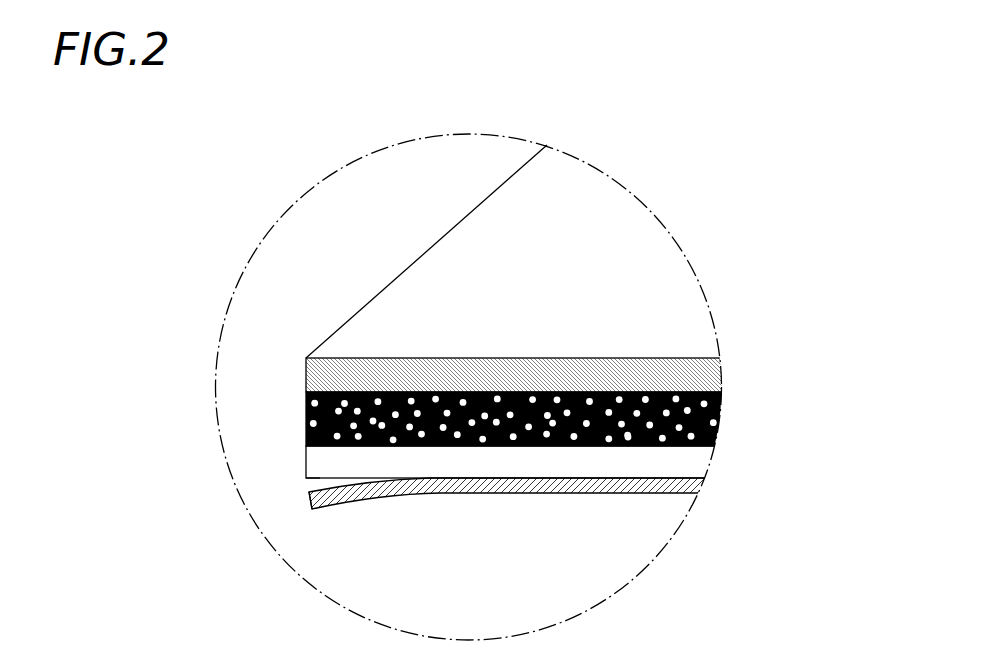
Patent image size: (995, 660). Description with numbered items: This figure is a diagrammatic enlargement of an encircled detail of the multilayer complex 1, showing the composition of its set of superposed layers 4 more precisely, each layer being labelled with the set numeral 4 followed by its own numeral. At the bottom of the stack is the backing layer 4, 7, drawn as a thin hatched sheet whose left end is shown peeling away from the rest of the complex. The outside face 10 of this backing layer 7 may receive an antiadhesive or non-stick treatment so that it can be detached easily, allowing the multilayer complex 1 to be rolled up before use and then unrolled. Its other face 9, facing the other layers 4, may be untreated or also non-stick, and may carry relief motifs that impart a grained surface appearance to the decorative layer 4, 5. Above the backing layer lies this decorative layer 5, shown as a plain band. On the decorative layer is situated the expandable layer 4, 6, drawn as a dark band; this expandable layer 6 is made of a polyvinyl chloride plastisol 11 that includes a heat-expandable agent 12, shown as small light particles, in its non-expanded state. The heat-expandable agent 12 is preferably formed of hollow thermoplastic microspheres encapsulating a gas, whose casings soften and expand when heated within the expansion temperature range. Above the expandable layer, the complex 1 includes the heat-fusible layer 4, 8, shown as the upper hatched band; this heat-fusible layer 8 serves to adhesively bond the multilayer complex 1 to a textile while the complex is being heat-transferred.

The multilayer complex 1 is at (294, 290).
The superposed layers 4 is at (476, 399).
The cover plate 4, 8 is at (516, 310).
The heat-fusible layer 8 is at (440, 320).
The light guide / scattering layer 4, 6 is at (474, 404).
The expandable layer 6 is at (290, 422).
The transparent layer 4, 5 is at (516, 508).
The decorative layer 5 is at (460, 460).
The bottom film 4, 7 is at (519, 524).
The backing layer 7 is at (553, 482).
The other face 9 is at (327, 489).
The outside face 10 is at (330, 508).
The polyvinyl chloride plastisol 11 is at (628, 442).
The heat-expandable agent 12 is at (373, 422).